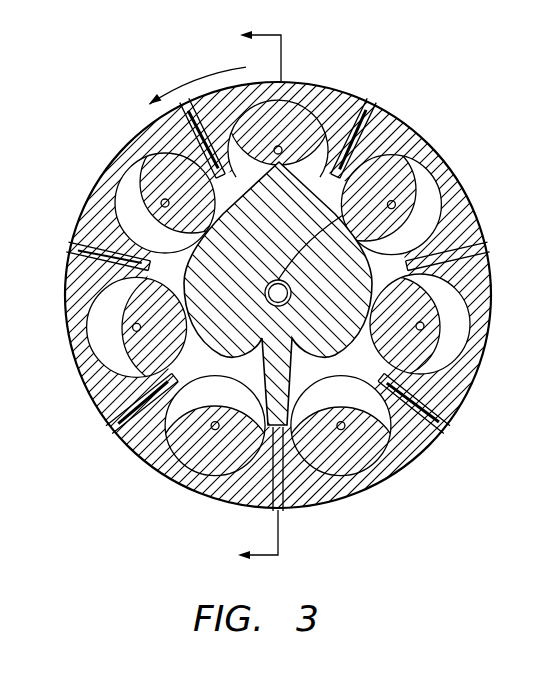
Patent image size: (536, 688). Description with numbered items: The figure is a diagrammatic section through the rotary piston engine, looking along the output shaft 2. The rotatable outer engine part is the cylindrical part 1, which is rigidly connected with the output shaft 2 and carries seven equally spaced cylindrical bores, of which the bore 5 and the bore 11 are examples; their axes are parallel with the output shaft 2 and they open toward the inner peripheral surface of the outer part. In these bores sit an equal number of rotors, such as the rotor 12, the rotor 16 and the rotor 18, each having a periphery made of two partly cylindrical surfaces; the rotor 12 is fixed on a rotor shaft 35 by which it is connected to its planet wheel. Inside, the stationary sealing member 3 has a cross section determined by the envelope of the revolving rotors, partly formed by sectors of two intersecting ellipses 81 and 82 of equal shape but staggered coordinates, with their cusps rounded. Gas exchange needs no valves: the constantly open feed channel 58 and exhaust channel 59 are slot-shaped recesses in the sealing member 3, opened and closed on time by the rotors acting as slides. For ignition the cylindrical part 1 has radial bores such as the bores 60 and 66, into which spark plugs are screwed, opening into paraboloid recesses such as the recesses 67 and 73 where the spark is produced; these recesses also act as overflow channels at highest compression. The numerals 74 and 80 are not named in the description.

The cylindrical part 1 is at (470, 222).
The output shaft 2 is at (337, 208).
The sealing member 3 is at (357, 271).
The cylindrical bore 5 is at (148, 452).
The cylindrical bore 11 is at (95, 331).
The rotor 12 is at (172, 458).
The rotor 16 is at (306, 112).
The rotor 18 is at (145, 372).
The rotor shaft 35 is at (200, 465).
The feed channel 58 is at (388, 364).
The exhaust channel 59 is at (205, 355).
The bore 60 is at (120, 411).
The bore 66 is at (150, 262).
The paraboloid recess 67 is at (145, 386).
The paraboloid recess 73 is at (97, 240).
The slot end wall 74 is at (135, 444).
The vane 80 is at (150, 272).
The ellipse 81 is at (152, 242).
The ellipse 82 is at (187, 272).